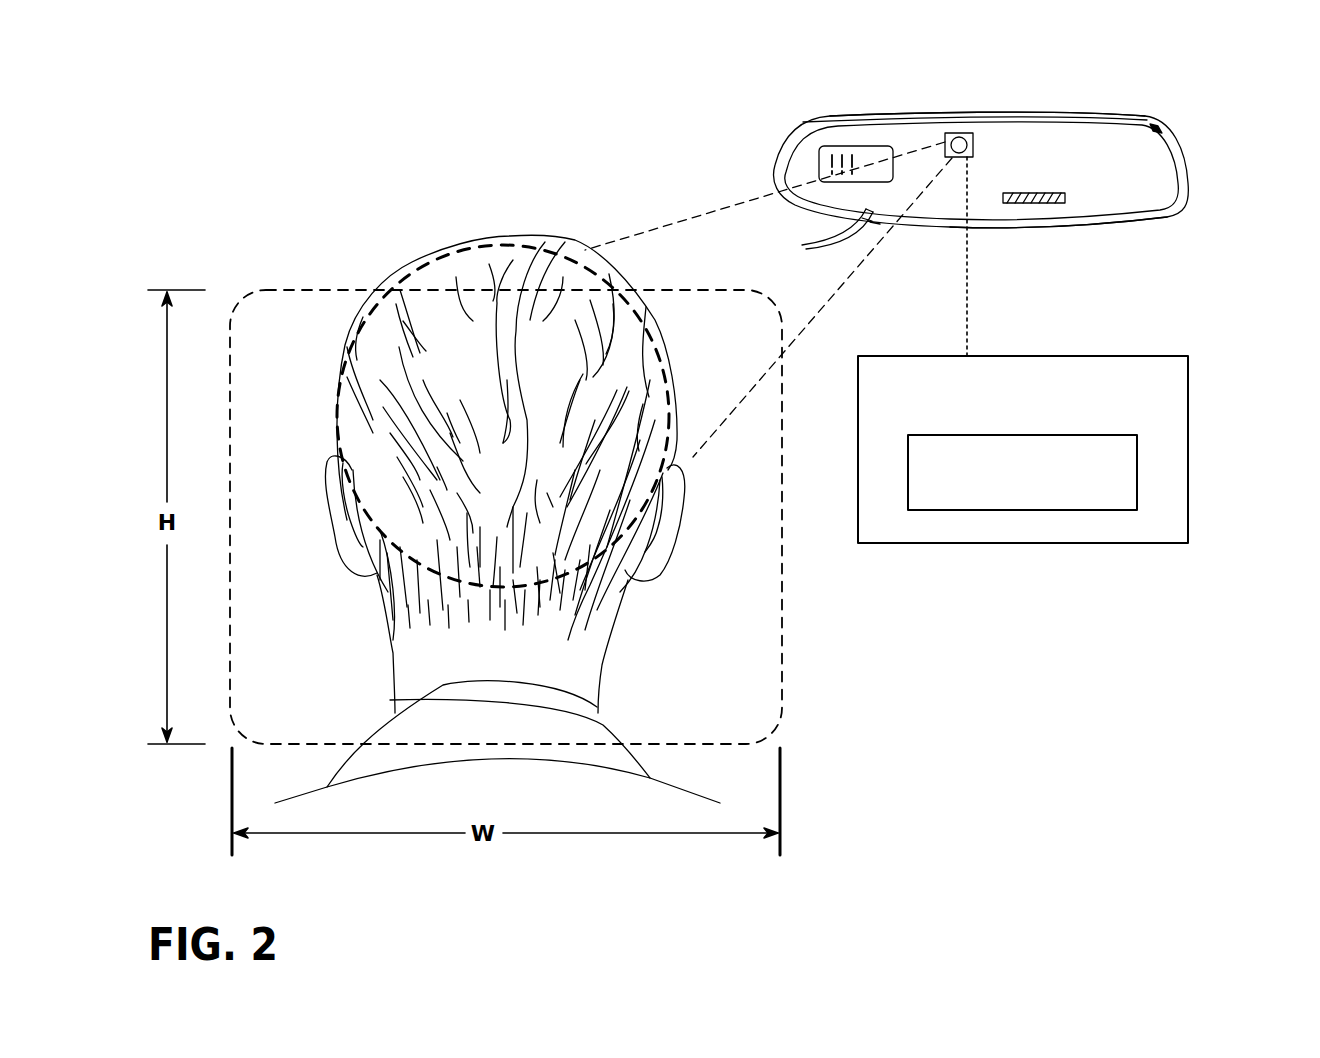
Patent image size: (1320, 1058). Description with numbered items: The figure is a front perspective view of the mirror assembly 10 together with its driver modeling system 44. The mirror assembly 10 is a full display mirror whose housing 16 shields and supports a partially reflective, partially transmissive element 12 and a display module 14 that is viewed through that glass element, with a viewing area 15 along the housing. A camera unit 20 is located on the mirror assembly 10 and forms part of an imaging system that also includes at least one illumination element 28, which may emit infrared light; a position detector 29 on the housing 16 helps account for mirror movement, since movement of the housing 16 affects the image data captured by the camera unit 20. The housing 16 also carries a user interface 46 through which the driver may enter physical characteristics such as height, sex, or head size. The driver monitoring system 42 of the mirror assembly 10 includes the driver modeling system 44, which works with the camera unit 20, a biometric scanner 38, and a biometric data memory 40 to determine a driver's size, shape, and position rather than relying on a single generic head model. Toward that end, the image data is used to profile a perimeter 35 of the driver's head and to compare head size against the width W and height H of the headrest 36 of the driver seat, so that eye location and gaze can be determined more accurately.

The mirror assembly 10 is at (1186, 155).
The partially reflective, partially transmissive element 12 is at (1020, 145).
The display module 14 is at (837, 146).
The viewing area 15 is at (873, 127).
The housing 16 is at (1137, 216).
The camera unit 20 is at (957, 133).
The illumination element 28 is at (823, 232).
The position detector 29 is at (1156, 125).
The perimeter of the driver's head 35 is at (495, 246).
The headrest 36 is at (782, 572).
The biometric scanner 38 is at (893, 397).
The biometric data memory 40 is at (968, 470).
The driver monitoring system 42 is at (1212, 96).
The driver modeling system 44 is at (737, 180).
The user interface 46 is at (1047, 203).